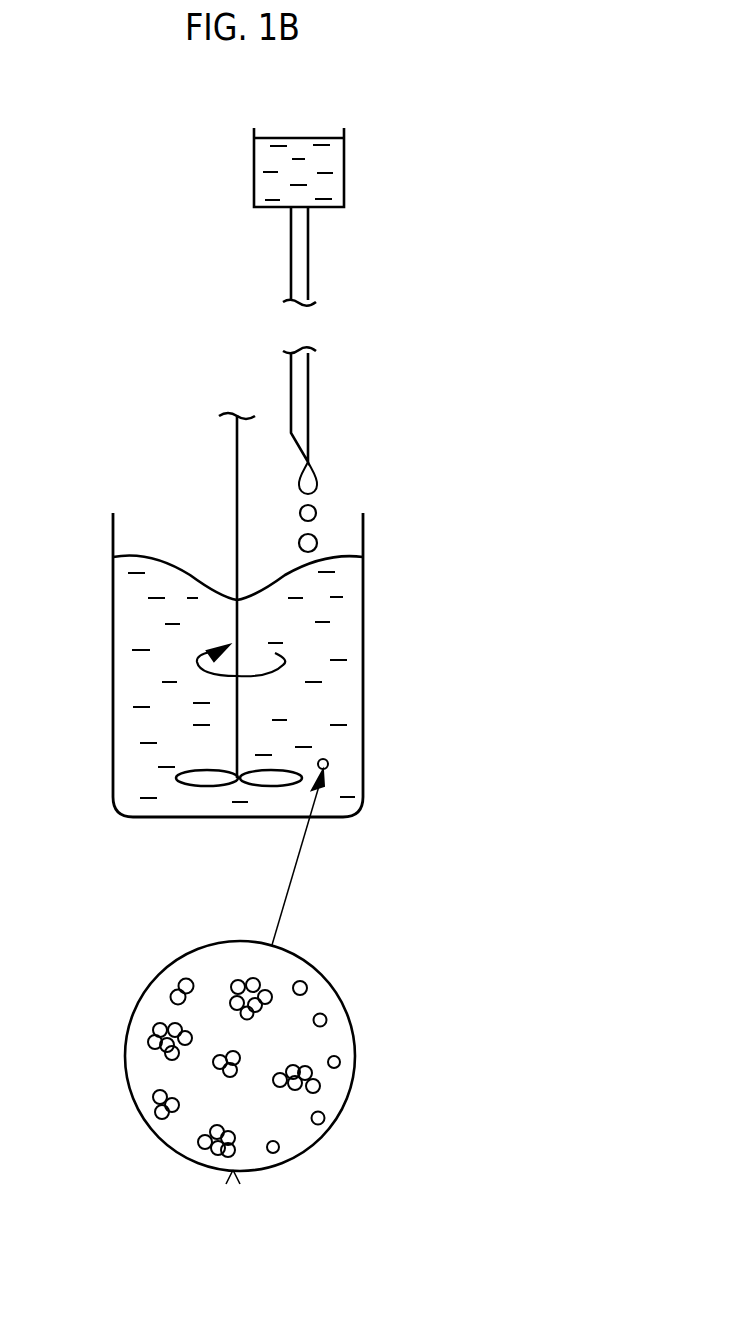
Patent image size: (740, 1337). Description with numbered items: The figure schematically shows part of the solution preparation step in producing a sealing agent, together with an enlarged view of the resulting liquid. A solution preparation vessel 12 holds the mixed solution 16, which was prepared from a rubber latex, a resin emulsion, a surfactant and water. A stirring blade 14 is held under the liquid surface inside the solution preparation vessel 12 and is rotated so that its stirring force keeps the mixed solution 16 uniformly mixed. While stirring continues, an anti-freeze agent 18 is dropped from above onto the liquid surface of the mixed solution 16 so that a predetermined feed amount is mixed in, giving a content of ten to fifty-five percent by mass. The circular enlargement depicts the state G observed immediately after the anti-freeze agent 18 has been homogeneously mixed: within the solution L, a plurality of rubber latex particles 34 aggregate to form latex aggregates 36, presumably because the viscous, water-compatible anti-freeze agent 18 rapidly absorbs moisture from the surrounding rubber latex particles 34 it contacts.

The anti-freeze agent 18 is at (290, 138).
The solution preparation vessel 12 is at (118, 817).
The mixed solution 16 is at (163, 558).
The stirring blade 14 is at (188, 787).
The latex aggregates 36 is at (250, 975).
The rubber latex particles 34 is at (307, 987).
The solution L is at (142, 1070).
The state G is at (236, 1172).